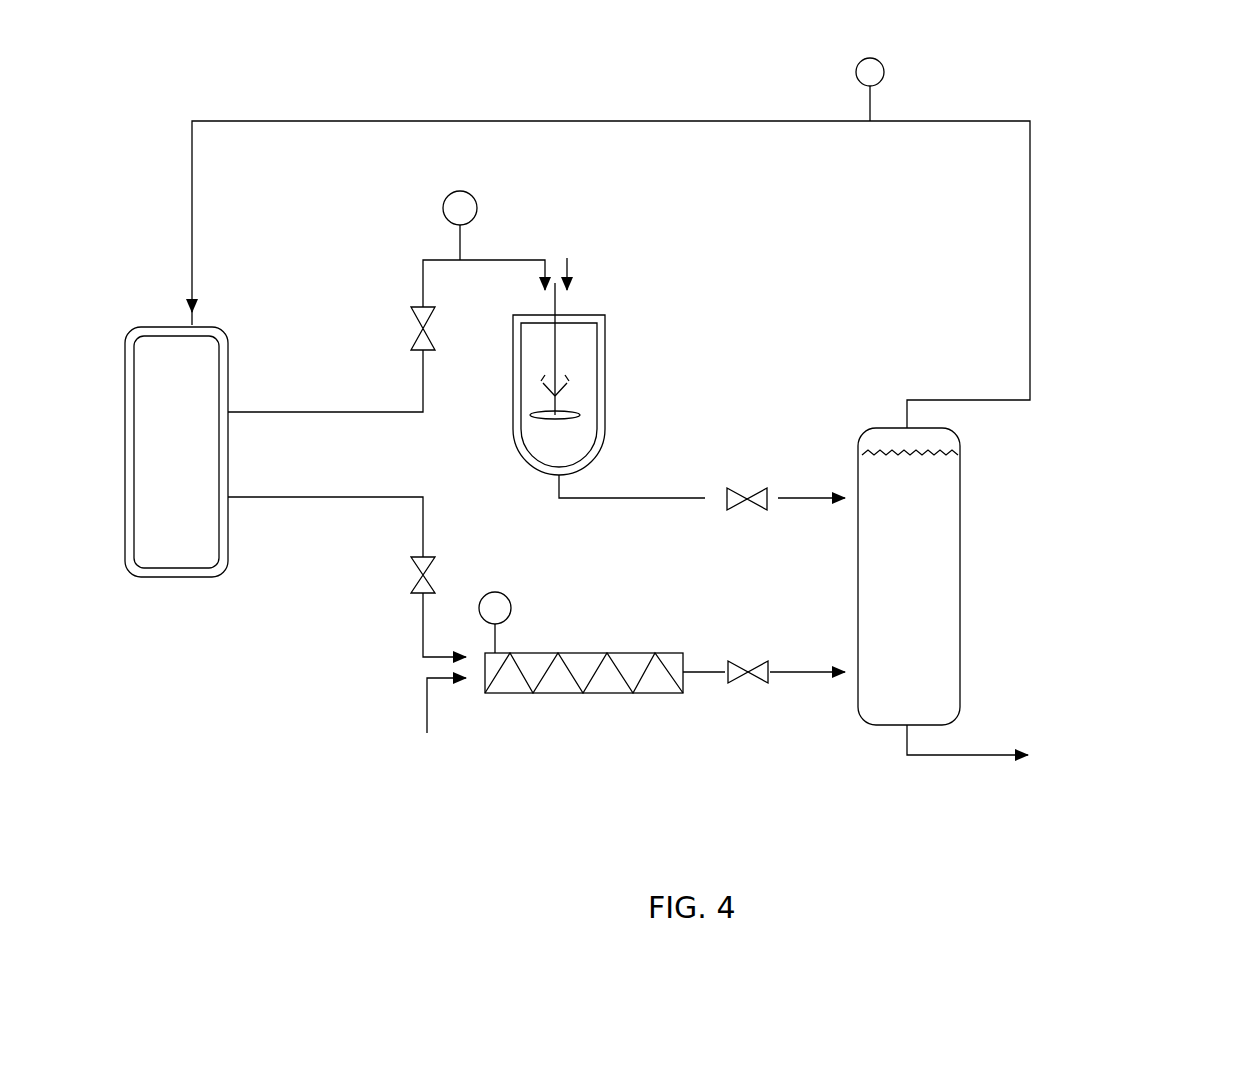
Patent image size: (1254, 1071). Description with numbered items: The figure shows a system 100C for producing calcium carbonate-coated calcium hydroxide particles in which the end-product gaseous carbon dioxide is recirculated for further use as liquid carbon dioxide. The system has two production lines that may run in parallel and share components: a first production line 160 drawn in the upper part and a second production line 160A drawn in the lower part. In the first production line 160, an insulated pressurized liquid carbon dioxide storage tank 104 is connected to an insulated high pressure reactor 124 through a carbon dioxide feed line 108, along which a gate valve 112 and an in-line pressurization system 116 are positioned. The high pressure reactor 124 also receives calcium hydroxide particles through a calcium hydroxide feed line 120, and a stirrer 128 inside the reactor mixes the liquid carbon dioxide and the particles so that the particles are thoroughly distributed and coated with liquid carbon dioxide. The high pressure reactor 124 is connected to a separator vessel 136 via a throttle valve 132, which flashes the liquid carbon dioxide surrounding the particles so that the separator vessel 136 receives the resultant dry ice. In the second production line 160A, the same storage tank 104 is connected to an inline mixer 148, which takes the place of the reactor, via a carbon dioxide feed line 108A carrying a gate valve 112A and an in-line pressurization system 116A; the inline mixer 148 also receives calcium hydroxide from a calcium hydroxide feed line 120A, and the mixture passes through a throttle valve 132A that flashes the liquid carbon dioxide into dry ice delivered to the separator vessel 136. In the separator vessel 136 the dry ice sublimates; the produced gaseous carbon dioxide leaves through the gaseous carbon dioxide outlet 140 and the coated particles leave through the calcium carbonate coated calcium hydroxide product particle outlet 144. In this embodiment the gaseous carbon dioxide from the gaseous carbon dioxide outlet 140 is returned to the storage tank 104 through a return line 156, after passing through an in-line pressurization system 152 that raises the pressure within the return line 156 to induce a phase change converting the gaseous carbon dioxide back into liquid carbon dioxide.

The system 100C is at (1106, 246).
The insulated pressurized liquid CO2 storage tank 104 is at (146, 312).
The CO2 feed line 108 is at (310, 398).
The CO2 feed line 108A is at (331, 511).
The gate valve 112 is at (407, 297).
The gate valve 112A is at (404, 610).
The in-line pressurization system 116 is at (488, 194).
The in-line pressurization system 116A is at (524, 608).
The Ca(OH)2 feed line 120 is at (585, 285).
The Ca(OH)2 feed line 120A is at (410, 714).
The high pressure reactor 124 is at (620, 353).
The stirrer 128 is at (602, 414).
The throttle valve 132 is at (773, 480).
The throttle valve 132A is at (774, 696).
The separator vessel 136 is at (975, 582).
The gaseous CO2 outlet 140 is at (1124, 384).
The calcium carbonate coated calcium hydroxide product particle outlet 144 is at (1133, 726).
The inline mixer 148 is at (647, 709).
The in-line pressurization system 152 is at (887, 73).
The return line 156 is at (322, 119).
The first production line 160 is at (790, 302).
The second production line 160A is at (223, 687).